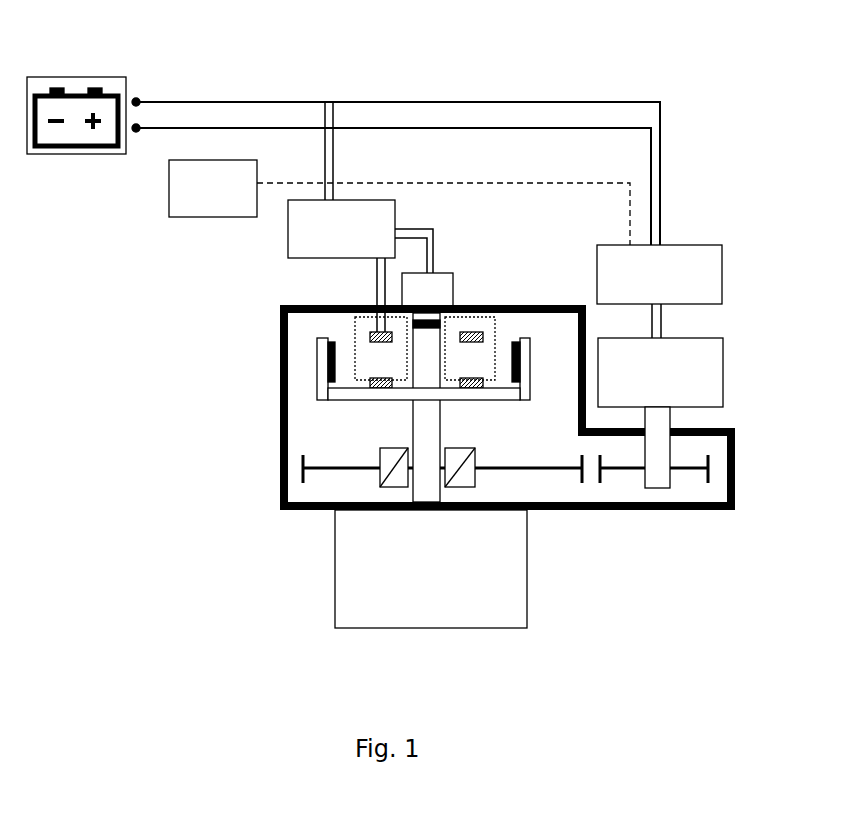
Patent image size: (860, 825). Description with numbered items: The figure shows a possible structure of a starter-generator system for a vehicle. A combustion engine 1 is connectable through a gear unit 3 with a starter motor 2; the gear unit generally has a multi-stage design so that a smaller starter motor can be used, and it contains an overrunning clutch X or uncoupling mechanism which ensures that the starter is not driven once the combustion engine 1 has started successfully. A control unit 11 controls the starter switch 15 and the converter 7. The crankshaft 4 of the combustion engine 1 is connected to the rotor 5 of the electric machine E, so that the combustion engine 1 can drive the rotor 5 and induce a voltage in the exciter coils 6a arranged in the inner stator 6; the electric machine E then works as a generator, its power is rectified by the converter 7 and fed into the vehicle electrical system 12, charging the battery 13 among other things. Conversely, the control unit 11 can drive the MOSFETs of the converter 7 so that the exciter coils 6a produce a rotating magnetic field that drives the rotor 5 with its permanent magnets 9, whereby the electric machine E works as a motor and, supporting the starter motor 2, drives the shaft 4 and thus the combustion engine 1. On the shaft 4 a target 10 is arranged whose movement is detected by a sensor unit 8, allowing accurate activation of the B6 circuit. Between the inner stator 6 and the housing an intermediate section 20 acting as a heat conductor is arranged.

The combustion engine 1 is at (335, 571).
The starter motor 2 is at (723, 385).
The gear unit 3 is at (657, 478).
The crankshaft 4 is at (327, 403).
The rotor 5 is at (320, 360).
The inner stator 6 is at (368, 362).
The exciter coils 6a is at (370, 332).
The converter 7 is at (288, 236).
The sensor unit 8 is at (437, 273).
The permanent magnets 9 is at (503, 340).
The target 10 is at (428, 318).
The control unit 11 is at (169, 195).
The vehicle electrical system 12 is at (373, 102).
The battery 13 is at (72, 77).
The starter switch 15 is at (688, 245).
The intermediate section 20 is at (470, 322).
The electric machine E is at (412, 433).
The overrunning clutch X is at (392, 480).